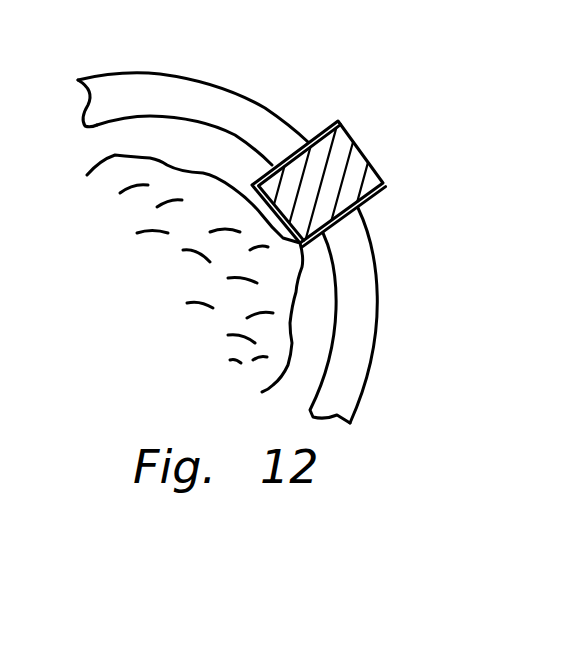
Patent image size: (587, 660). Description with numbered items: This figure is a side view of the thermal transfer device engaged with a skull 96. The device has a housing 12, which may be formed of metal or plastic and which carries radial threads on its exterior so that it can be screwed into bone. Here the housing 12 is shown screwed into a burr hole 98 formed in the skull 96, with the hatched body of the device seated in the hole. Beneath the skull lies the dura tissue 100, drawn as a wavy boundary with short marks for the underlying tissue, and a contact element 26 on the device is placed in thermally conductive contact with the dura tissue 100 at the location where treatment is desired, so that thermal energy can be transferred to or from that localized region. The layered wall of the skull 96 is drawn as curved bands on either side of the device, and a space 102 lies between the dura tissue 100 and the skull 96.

The housing 12 is at (336, 122).
The contact element 26 is at (253, 183).
The skull 96 is at (380, 265).
The burr hole 98 is at (360, 208).
The dura tissue 100 is at (288, 344).
The space 102 is at (183, 143).